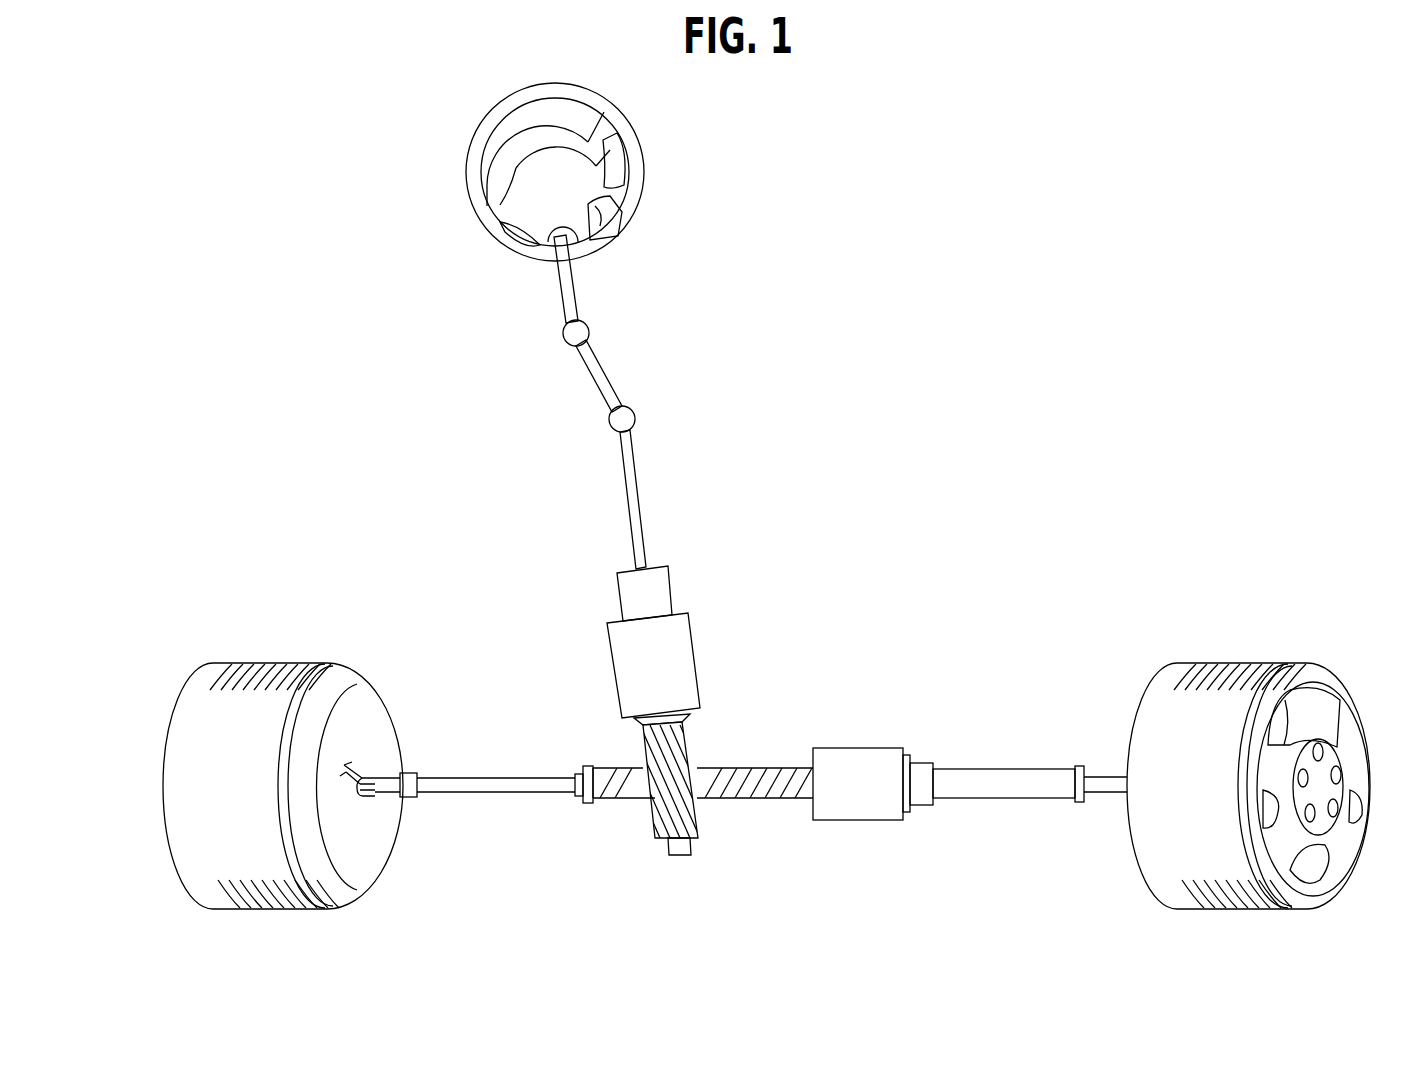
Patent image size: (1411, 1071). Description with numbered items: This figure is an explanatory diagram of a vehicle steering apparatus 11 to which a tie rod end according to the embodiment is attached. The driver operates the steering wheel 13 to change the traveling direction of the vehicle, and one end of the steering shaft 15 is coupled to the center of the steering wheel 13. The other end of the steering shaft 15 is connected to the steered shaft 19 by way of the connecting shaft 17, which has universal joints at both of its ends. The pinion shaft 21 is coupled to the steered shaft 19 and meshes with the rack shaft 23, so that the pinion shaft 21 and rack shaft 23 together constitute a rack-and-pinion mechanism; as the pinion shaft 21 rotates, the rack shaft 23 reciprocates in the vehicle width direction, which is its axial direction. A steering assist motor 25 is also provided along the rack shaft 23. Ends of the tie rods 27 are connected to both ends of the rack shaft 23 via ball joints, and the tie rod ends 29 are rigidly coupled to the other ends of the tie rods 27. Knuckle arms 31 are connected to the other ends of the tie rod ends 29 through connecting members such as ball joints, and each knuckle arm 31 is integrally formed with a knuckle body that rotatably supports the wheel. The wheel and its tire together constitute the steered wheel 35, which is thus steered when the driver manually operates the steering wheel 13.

The vehicle steering apparatus 11 is at (1052, 178).
The steering wheel 13 is at (467, 176).
The steering shaft 15 is at (564, 282).
The connecting shaft 17 is at (598, 378).
The steered shaft 19 is at (630, 497).
The pinion shaft 21 is at (666, 812).
The rack shaft 23 is at (770, 800).
The steering assist motor 25 is at (857, 822).
The tie rod 27 is at (495, 796).
The tie rod end 29 is at (412, 772).
The knuckle arm 31 is at (357, 770).
The steered wheel 35 is at (1277, 752).